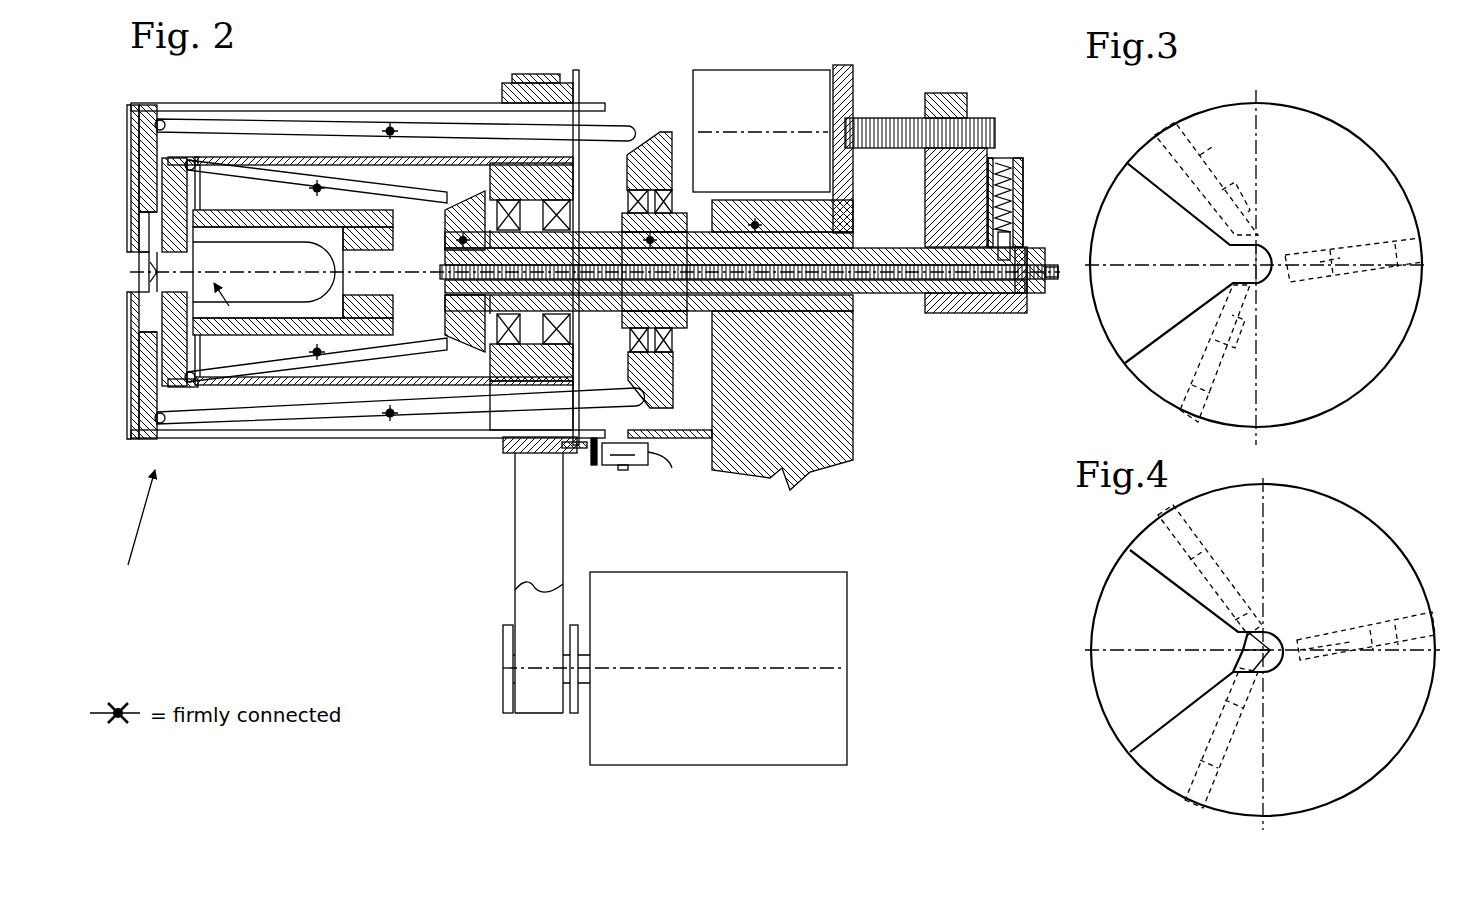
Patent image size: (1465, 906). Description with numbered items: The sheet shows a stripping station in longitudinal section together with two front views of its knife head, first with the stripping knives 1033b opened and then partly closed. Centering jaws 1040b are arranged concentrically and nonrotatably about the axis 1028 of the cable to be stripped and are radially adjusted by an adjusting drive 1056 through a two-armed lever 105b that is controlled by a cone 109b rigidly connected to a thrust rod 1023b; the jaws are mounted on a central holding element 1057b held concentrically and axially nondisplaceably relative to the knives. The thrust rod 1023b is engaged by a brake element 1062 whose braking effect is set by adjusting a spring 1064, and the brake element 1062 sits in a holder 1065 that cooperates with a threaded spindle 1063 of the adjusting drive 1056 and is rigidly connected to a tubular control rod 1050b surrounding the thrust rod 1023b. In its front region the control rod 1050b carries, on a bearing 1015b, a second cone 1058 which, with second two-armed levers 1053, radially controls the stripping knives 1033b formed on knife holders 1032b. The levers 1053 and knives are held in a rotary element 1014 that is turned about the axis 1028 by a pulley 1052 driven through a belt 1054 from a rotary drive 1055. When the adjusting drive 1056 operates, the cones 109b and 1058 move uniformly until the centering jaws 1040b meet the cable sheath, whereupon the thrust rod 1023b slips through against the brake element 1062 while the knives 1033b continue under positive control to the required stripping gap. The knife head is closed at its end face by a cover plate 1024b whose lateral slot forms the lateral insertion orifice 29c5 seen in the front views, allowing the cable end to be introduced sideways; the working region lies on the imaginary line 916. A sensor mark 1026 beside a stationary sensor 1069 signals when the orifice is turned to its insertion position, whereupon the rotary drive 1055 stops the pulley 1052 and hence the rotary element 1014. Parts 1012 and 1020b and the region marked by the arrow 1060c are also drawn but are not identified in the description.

In FIG. 2, the cover plate 1024b is at (138, 107).
In FIG. 3, the cover plate 1024b is at (1297, 357).
In FIG. 4, the cover plate 1024b is at (1176, 747).
In FIG. 2, the central holding element 1057b is at (238, 222).
In FIG. 2, the second two-armed levers 1053 is at (291, 131).
In FIG. 2, the two-armed lever 105b is at (337, 188).
In FIG. 2, the cone 109b is at (458, 200).
In FIG. 2, the bearing housing 1012 is at (507, 203).
In FIG. 2, the pulley 1052 is at (528, 80).
In FIG. 2, the mounting plate 1020b is at (582, 128).
In FIG. 2, the bearing 1015b is at (678, 188).
In FIG. 2, the adjusting drive 1056 is at (718, 95).
In FIG. 2, the second cone 1058 is at (645, 137).
In FIG. 2, the threaded spindle 1063 is at (843, 66).
In FIG. 2, the holder 1065 is at (902, 122).
In FIG. 2, the spring 1064 is at (1018, 185).
In FIG. 2, the brake element 1062 is at (1022, 250).
In FIG. 2, the imaginary line 916 is at (157, 272).
In FIG. 2, the centering jaws 1040b is at (170, 263).
In FIG. 2, the stripping knives 1033b is at (162, 308).
In FIG. 3, the stripping knives 1033b is at (1233, 220).
In FIG. 4, the stripping knives 1033b is at (1245, 660).
In FIG. 2, the knife holders 1032b is at (147, 390).
In FIG. 3, the knife holders 1032b is at (1187, 170).
In FIG. 2, the head assembly 1060c is at (130, 532).
In FIG. 2, the lateral insertion orifice 29c5 is at (293, 278).
In FIG. 3, the lateral insertion orifice 29c5 is at (1233, 275).
In FIG. 4, the lateral insertion orifice 29c5 is at (1130, 618).
In FIG. 2, the axis 1028 is at (297, 318).
In FIG. 2, the rotary element 1014 is at (510, 377).
In FIG. 2, the belt 1054 is at (530, 643).
In FIG. 2, the sensor mark 1026 is at (593, 462).
In FIG. 2, the sensor 1069 is at (613, 467).
In FIG. 2, the rotary drive 1055 is at (753, 590).
In FIG. 2, the control rod 1050b is at (905, 287).
In FIG. 2, the thrust rod 1023b is at (940, 312).